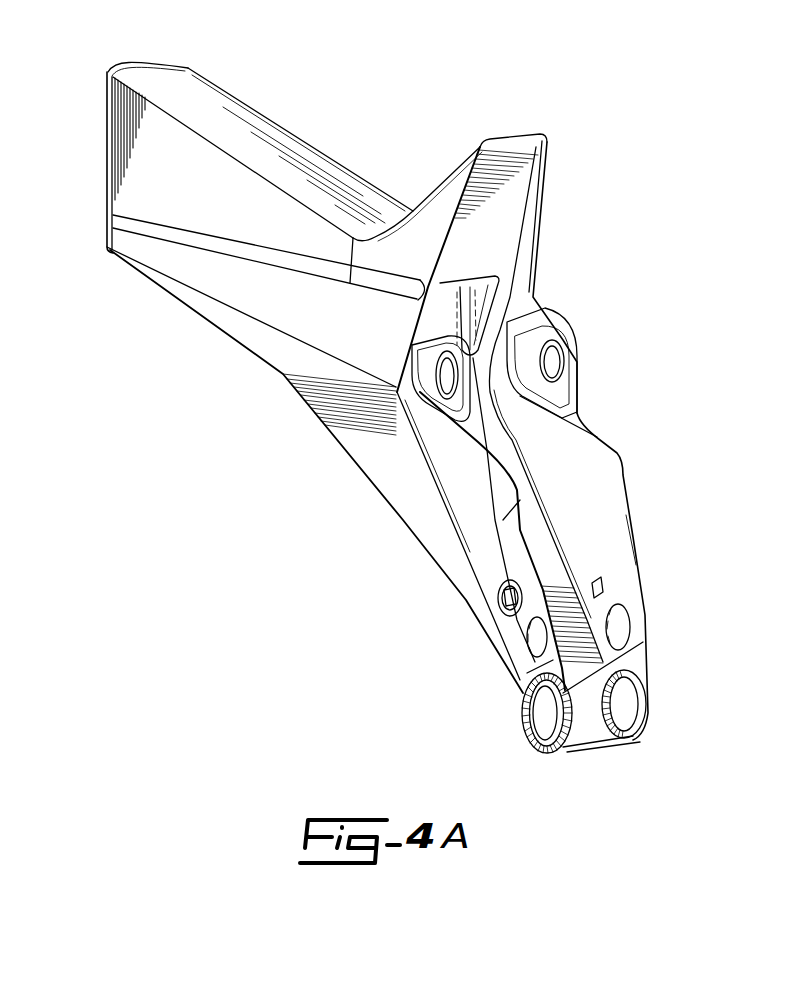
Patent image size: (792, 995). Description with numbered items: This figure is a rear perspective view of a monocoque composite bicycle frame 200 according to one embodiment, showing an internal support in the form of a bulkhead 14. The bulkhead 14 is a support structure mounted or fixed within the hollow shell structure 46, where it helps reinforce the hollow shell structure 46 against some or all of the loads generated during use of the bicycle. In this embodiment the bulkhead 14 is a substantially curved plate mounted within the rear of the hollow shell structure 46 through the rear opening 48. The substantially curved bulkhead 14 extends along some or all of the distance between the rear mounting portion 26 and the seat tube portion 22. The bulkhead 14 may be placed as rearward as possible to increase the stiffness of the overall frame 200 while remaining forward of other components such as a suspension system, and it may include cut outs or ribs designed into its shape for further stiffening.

The frame 200 is at (621, 97).
The seat tube portion 22 is at (437, 222).
The bulkhead 14 is at (510, 208).
The hollow shell structure 46 is at (607, 442).
The rear opening 48 is at (591, 505).
The rear mounting portion 26 is at (500, 638).